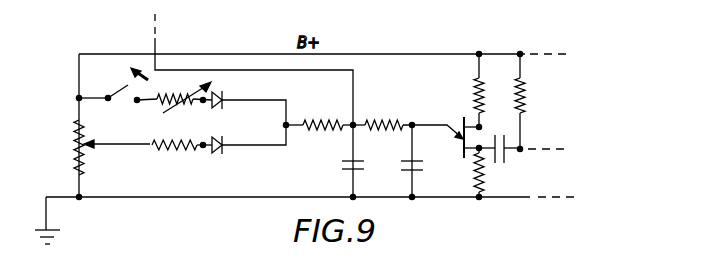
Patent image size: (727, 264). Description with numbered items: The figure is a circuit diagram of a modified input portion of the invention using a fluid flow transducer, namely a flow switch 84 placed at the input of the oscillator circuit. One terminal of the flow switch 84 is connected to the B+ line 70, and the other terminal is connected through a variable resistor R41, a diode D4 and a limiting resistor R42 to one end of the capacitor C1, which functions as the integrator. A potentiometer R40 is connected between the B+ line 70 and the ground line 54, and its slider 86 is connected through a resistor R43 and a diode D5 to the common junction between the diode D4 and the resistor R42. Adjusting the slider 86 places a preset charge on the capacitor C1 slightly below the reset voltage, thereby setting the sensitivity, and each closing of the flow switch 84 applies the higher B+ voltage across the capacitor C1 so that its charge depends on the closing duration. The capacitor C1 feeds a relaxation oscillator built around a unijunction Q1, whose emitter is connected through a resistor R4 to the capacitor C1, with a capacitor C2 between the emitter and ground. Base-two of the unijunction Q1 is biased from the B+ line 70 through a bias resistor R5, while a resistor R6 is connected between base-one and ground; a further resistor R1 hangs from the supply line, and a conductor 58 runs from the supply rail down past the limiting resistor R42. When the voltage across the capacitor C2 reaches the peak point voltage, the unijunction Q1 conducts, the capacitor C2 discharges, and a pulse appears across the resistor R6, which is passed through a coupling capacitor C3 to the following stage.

The flow switch 84 is at (123, 89).
The slider 86 is at (85, 138).
The ground line 54 is at (206, 198).
The conductor line 58 is at (354, 82).
The B+ line 70 is at (424, 53).
The potentiometer R40 is at (74, 150).
The variable resistor R41 is at (186, 93).
The limiting resistor R42 is at (310, 118).
The resistor R43 is at (192, 152).
The resistor R4 is at (374, 118).
The bias resistor R5 is at (472, 91).
The resistor R6 is at (472, 181).
The resistor R1 is at (526, 91).
The diode D4 is at (224, 92).
The diode D5 is at (224, 151).
The capacitor C1 is at (342, 169).
The capacitor C2 is at (400, 170).
The coupling capacitor C3 is at (508, 162).
The unijunction Q1 is at (473, 137).